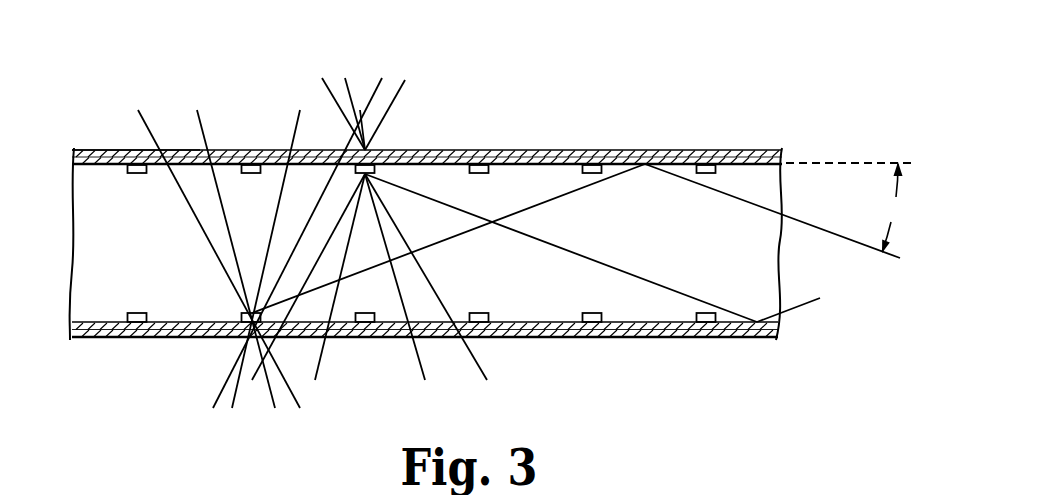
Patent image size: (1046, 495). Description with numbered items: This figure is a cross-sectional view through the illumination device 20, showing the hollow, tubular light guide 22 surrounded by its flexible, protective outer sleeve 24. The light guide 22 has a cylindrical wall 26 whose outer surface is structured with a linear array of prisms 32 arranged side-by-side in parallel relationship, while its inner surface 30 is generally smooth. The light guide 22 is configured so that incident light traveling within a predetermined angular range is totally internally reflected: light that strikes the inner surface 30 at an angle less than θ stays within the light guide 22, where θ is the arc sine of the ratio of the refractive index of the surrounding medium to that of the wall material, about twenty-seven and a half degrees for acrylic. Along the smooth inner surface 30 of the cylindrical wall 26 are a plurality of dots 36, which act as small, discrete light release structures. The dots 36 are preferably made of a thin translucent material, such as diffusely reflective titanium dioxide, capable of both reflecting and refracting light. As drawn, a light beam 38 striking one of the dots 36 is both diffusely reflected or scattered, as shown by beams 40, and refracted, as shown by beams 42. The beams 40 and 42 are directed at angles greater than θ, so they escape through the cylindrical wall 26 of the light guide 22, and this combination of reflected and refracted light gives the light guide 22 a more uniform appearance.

The illumination device 20 is at (678, 382).
The light guide 22 is at (788, 180).
The outer sleeve 24 is at (640, 150).
The cylindrical wall 26 is at (95, 153).
The inner surface 30 is at (512, 322).
The prisms 32 is at (767, 339).
The dots 36 is at (377, 170).
The light beam 38 is at (643, 281).
The beams 40 is at (399, 231).
The beams 42 is at (328, 92).